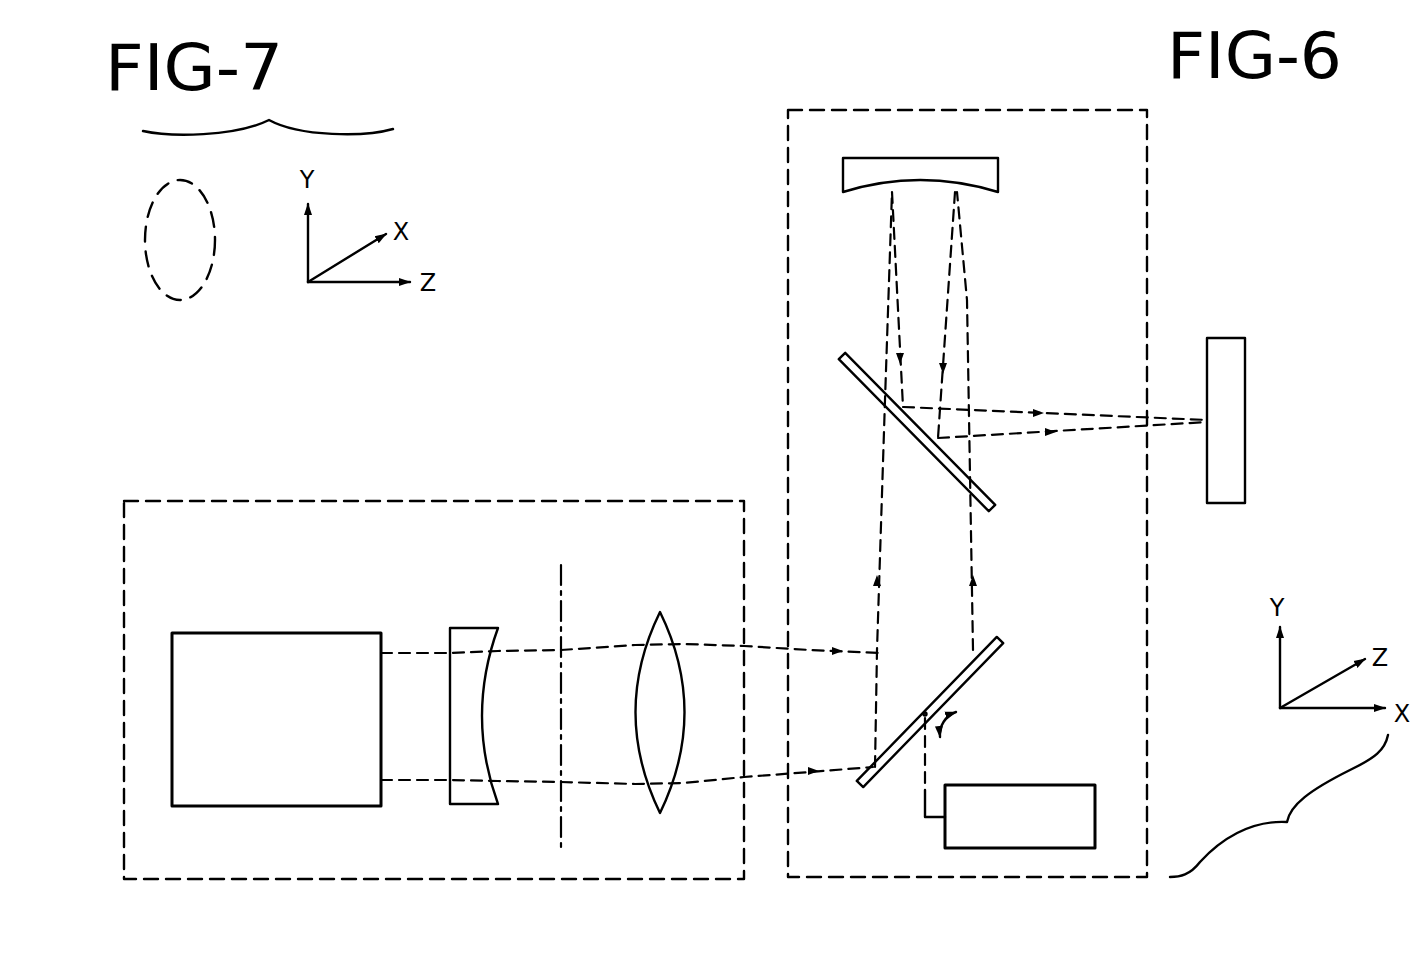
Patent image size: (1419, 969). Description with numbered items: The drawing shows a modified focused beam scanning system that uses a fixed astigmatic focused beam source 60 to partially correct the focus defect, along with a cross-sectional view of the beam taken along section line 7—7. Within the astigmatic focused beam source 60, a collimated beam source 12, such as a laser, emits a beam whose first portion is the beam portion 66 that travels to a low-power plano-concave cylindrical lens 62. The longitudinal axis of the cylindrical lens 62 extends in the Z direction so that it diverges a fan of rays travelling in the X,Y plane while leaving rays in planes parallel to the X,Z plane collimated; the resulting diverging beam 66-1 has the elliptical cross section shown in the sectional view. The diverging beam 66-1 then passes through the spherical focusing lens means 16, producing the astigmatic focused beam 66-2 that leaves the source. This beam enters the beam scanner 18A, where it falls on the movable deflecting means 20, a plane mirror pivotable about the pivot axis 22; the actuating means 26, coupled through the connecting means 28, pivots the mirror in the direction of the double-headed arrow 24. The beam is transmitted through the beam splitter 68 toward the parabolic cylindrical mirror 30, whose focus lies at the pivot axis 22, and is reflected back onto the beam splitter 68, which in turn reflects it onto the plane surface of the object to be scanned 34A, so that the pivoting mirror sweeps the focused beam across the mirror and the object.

In FIG. 6, the collimated beam source 12 is at (210, 633).
In FIG. 6, the focusing lens means 16 is at (660, 612).
In FIG. 6, the beam scanner 18A is at (1131, 110).
In FIG. 6, the movable deflecting means 20 is at (1003, 645).
In FIG. 6, the pivot axis 22 is at (924, 712).
In FIG. 6, the double-headed arrow 24 is at (957, 727).
In FIG. 6, the actuating means 26 is at (1055, 785).
In FIG. 6, the connecting means 28 is at (925, 812).
In FIG. 6, the parabolic cylindrical mirror 30 is at (1000, 166).
In FIG. 6, the object to be scanned 34A is at (1245, 342).
In FIG. 6, the astigmatic focused beam source 60 is at (565, 501).
In FIG. 6, the cylindrical lens 62 is at (458, 628).
In FIG. 6, the beam portion 66 is at (408, 653).
In FIG. 7, the diverging beam 66-1 is at (208, 270).
In FIG. 6, the diverging beam 66-1 is at (531, 783).
In FIG. 6, the astigmatic focused beam 66-2 is at (810, 650).
In FIG. 6, the beam splitter 68 is at (997, 507).
In FIG. 6, the section line 7— 7 is at (583, 586).